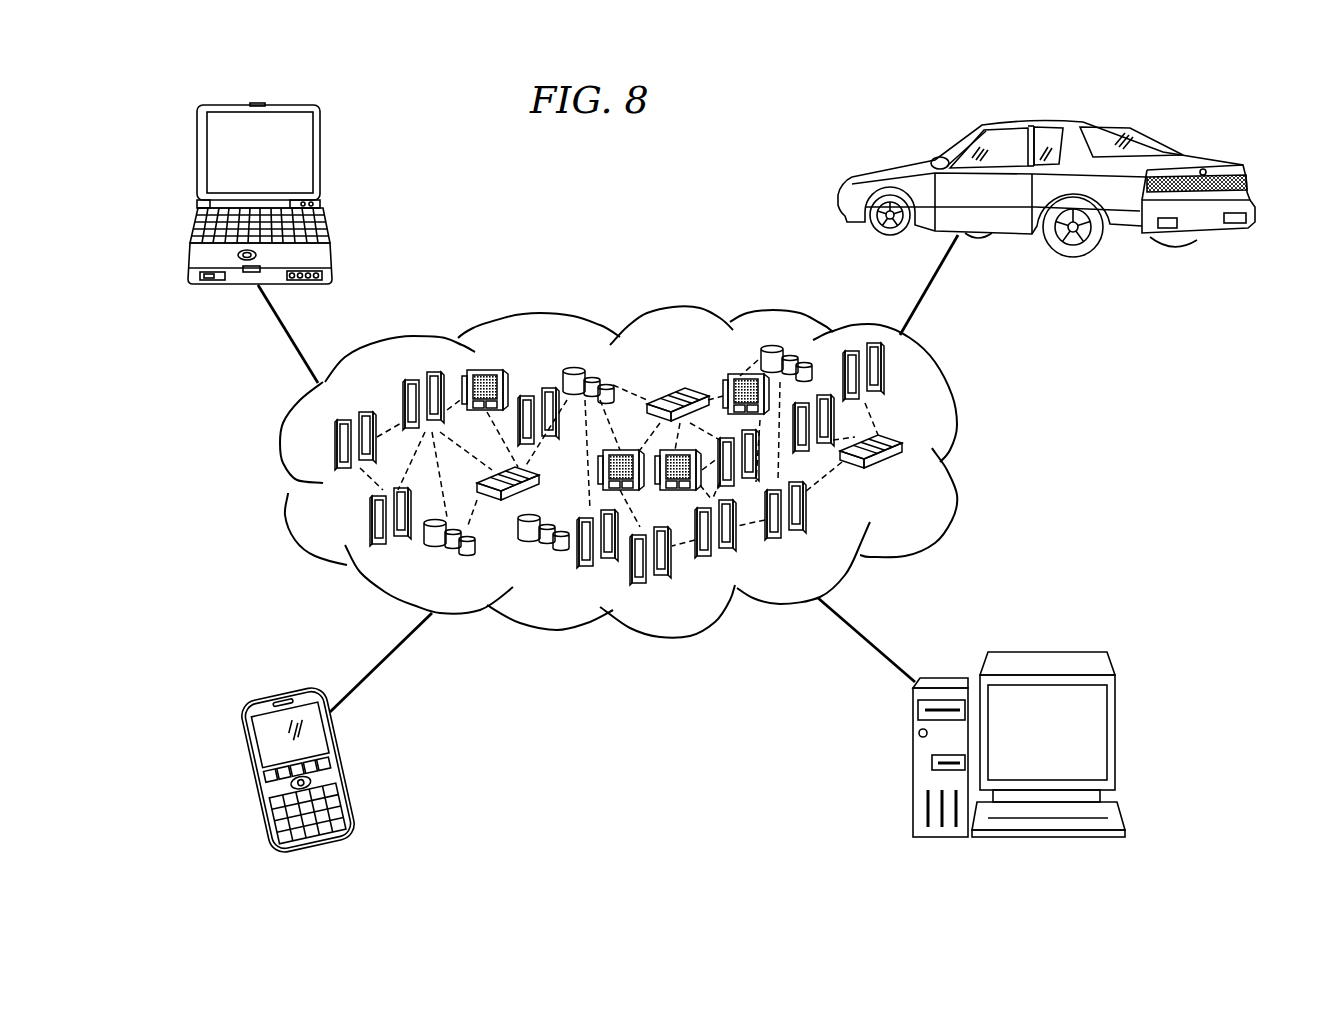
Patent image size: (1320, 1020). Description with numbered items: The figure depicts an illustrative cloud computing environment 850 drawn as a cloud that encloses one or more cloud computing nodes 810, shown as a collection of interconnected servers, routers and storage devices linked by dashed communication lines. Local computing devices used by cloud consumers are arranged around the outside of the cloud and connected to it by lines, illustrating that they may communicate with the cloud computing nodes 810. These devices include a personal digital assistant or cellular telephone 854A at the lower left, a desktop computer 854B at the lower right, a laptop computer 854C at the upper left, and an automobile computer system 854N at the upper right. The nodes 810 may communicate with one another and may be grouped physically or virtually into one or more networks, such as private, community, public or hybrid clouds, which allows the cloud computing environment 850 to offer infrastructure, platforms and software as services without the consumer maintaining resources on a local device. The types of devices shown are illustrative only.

The cloud computing environment 850 is at (953, 397).
The cloud computing nodes 810 is at (915, 483).
The personal digital assistant (PDA) or cellular telephone 854A is at (248, 755).
The desktop computer 854B is at (1047, 653).
The laptop computer 854C is at (197, 147).
The automobile computer system 854N is at (1213, 158).